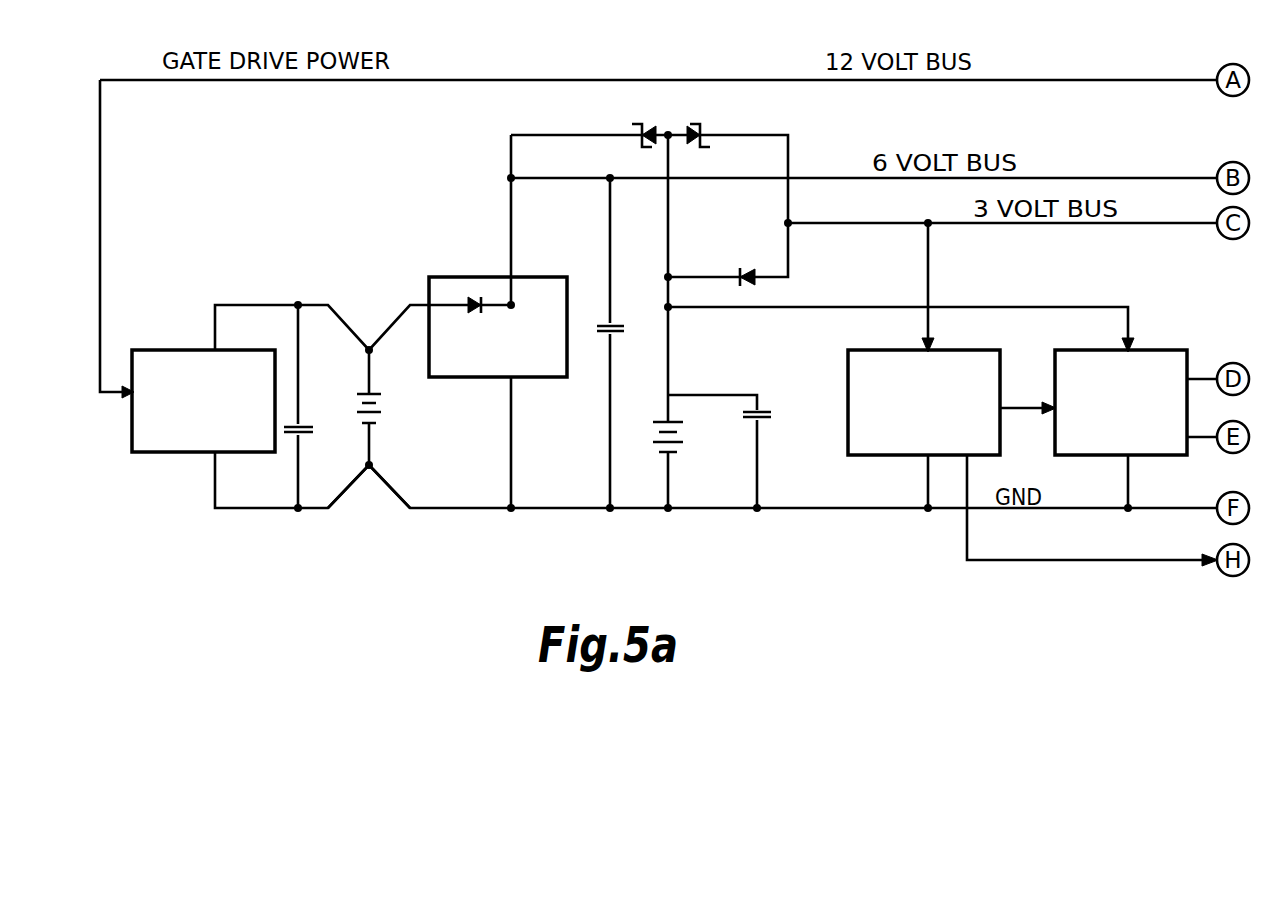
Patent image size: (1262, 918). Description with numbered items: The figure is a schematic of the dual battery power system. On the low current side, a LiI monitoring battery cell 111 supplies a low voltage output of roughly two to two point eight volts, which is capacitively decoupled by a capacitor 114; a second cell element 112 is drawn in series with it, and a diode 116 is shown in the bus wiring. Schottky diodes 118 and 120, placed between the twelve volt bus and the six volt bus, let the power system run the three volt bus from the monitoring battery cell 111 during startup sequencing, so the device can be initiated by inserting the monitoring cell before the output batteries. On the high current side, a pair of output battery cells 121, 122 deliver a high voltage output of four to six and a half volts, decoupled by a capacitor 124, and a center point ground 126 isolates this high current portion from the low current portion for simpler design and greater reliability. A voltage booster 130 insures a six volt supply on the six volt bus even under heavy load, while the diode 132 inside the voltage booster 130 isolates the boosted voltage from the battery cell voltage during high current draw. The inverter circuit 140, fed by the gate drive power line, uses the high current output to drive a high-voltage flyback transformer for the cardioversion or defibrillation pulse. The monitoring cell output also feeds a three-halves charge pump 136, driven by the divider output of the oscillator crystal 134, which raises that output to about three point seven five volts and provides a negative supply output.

The inverter circuit 140 is at (147, 453).
The capacitor 124 is at (316, 432).
The output battery cell 122 is at (383, 394).
The output battery cell 121 is at (383, 423).
The center point ground 126 is at (372, 469).
The voltage booster 130 is at (522, 377).
The diode 132 is at (466, 302).
The Schottky diode 120 is at (640, 127).
The Schottky diode 118 is at (706, 124).
The diode 116 is at (758, 283).
The monitoring battery cell 111 is at (683, 423).
The battery cell 112 is at (683, 452).
The capacitor 114 is at (770, 418).
The oscillator crystal 134 is at (848, 388).
The 3/2 charge pump 136 is at (1173, 350).